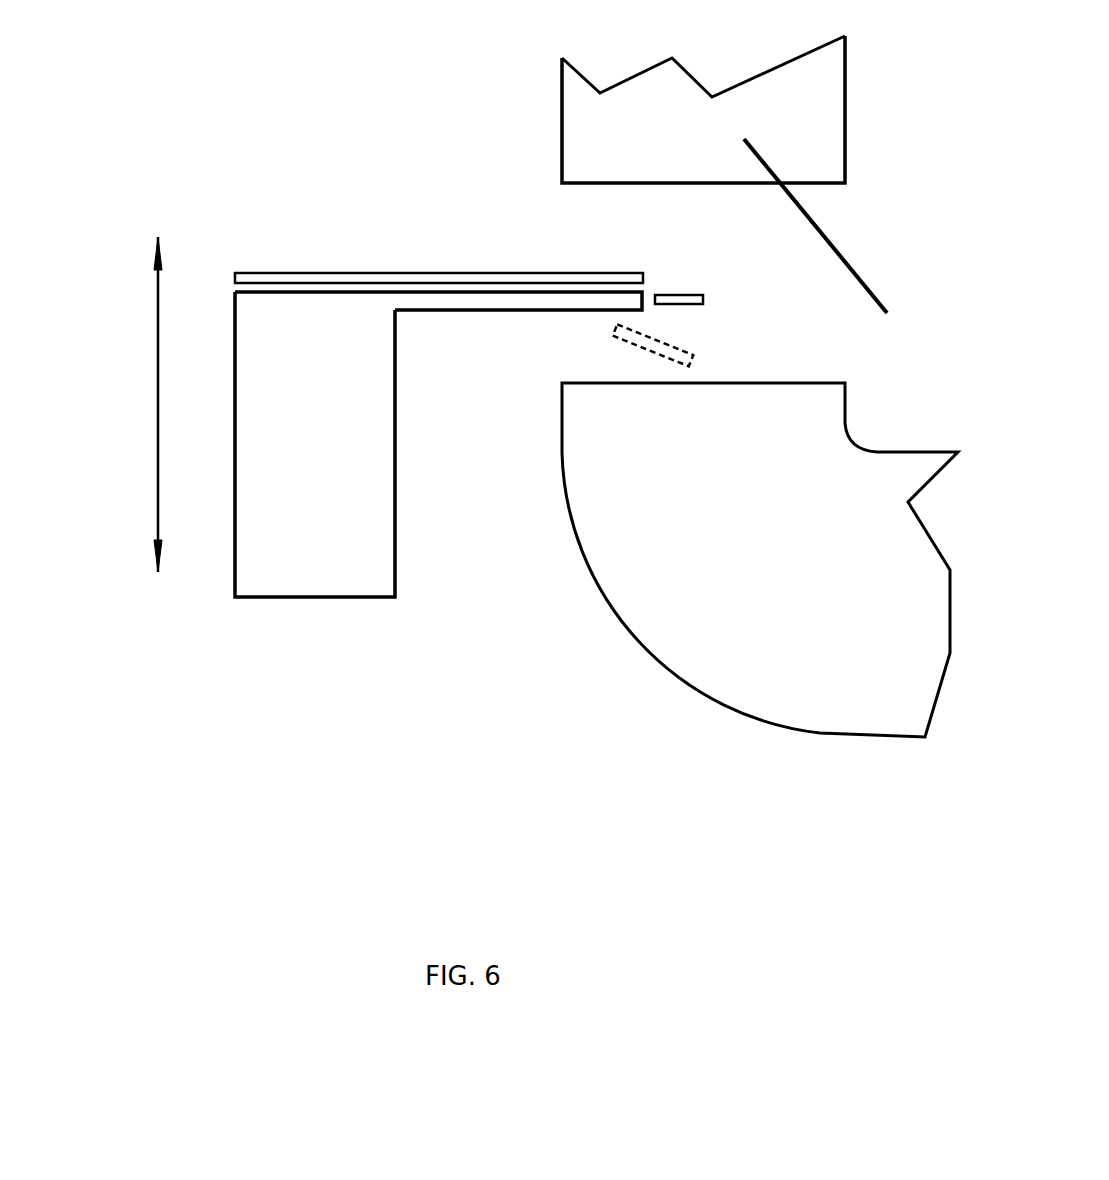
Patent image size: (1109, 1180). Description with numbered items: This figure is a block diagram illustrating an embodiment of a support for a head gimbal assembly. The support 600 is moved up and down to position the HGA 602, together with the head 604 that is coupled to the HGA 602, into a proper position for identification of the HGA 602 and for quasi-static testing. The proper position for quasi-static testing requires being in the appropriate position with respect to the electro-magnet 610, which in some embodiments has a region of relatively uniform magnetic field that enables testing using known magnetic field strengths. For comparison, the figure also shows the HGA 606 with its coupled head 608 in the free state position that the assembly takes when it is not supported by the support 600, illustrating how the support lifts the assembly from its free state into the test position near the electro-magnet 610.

The support 600 is at (232, 565).
The HGA 602 is at (578, 282).
The head 604 is at (700, 295).
The HGA 606 is at (563, 307).
The head 608 is at (643, 343).
The electro-magnet 610 is at (802, 440).